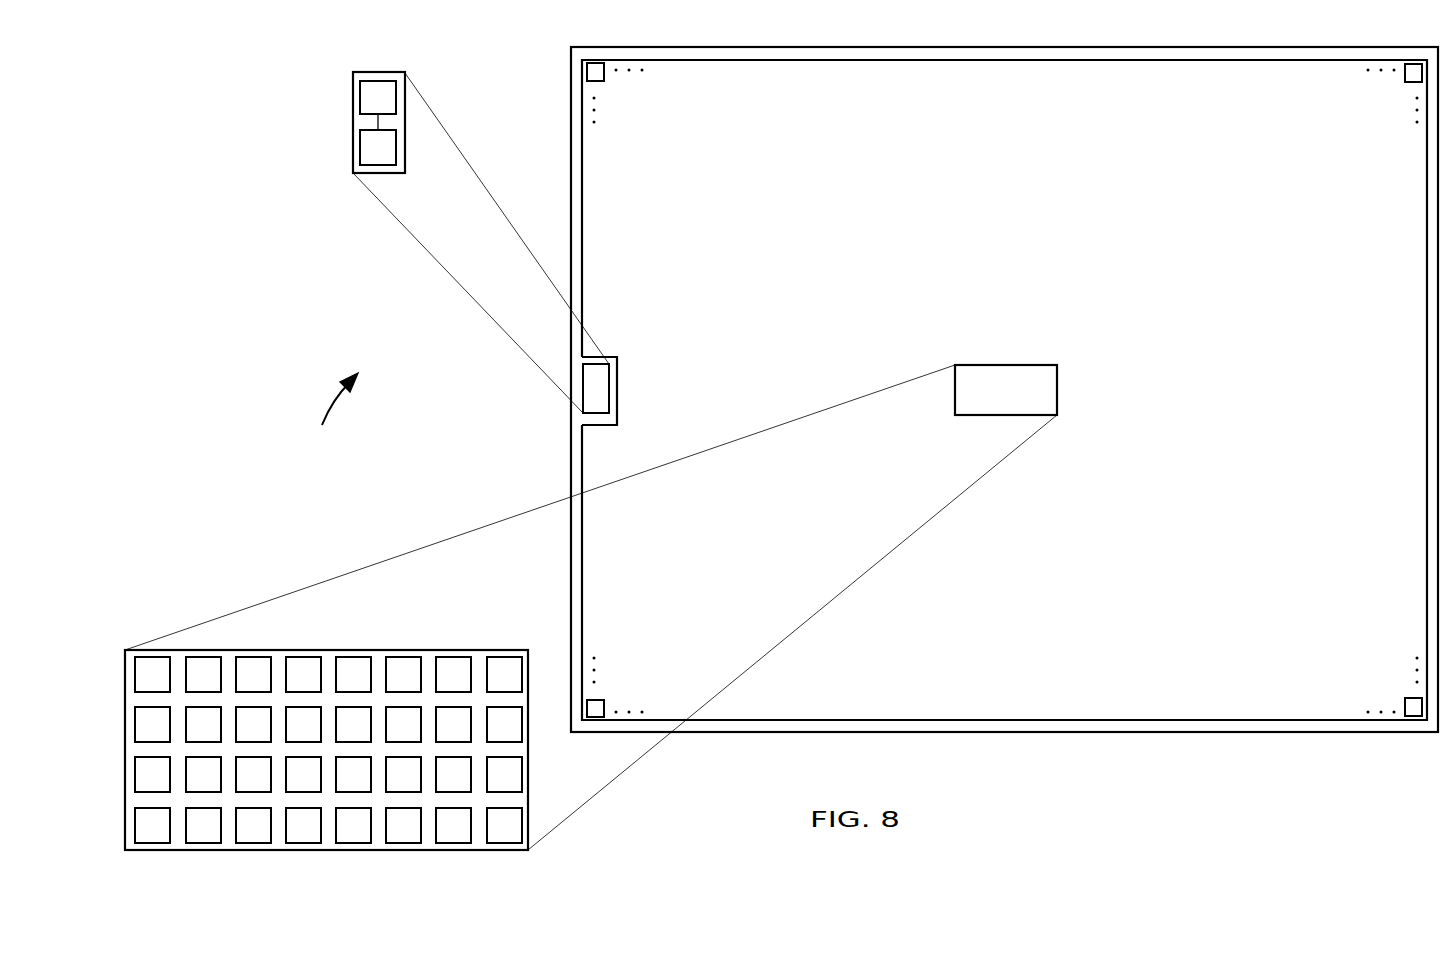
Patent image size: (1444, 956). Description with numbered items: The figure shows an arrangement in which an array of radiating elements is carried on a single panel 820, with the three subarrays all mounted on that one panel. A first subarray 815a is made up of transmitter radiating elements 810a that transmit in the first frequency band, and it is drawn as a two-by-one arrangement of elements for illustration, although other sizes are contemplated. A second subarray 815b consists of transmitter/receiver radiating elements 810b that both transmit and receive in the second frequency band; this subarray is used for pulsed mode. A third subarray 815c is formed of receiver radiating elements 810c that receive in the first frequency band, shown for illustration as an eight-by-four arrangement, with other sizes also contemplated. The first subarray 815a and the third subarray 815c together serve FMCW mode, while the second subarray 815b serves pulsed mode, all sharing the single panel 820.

The first subarray 815a is at (353, 97).
The transmitter radiating elements 810a is at (370, 148).
The second subarray 815b is at (1322, 59).
The transmitter/receiver radiating elements 810b is at (1417, 64).
The third subarray 815c is at (1057, 380).
The receiver radiating elements 810c is at (452, 667).
The single panel 820 is at (330, 417).